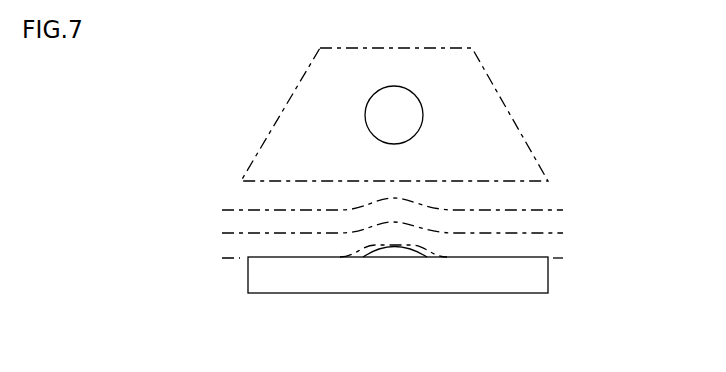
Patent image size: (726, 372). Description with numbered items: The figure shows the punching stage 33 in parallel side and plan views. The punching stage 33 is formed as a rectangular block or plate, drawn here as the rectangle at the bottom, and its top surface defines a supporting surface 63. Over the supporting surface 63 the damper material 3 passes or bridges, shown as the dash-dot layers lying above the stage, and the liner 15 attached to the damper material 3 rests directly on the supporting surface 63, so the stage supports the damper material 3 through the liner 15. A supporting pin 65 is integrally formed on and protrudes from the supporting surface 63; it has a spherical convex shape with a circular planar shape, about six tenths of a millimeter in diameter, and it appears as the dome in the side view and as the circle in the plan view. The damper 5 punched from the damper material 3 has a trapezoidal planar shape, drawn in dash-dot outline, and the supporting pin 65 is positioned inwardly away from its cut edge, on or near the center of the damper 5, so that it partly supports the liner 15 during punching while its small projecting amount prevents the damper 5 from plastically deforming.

The damper 5 is at (502, 103).
The supporting pin 65 is at (416, 96).
The damper material 3 is at (523, 215).
The liner 15 is at (222, 248).
The supporting surface 63 is at (530, 257).
The punching stage 33 is at (277, 269).